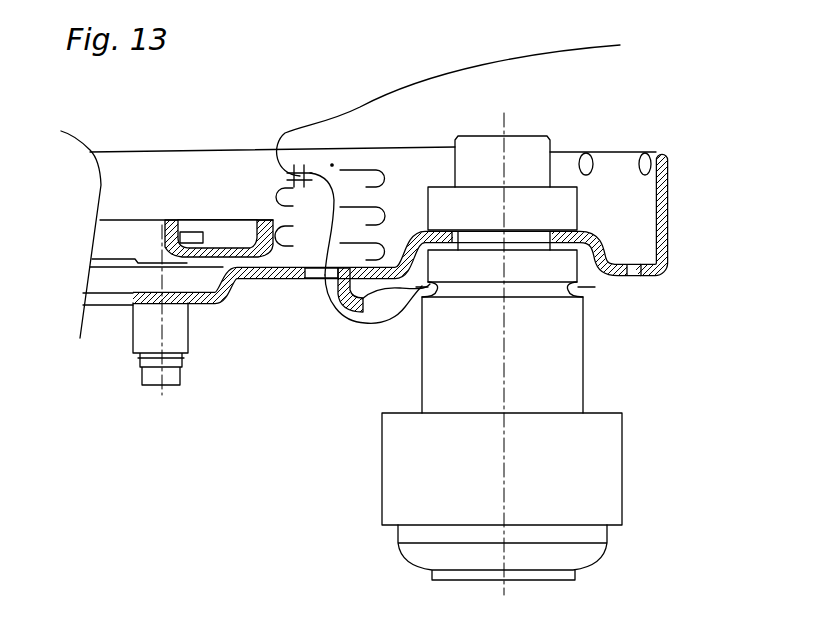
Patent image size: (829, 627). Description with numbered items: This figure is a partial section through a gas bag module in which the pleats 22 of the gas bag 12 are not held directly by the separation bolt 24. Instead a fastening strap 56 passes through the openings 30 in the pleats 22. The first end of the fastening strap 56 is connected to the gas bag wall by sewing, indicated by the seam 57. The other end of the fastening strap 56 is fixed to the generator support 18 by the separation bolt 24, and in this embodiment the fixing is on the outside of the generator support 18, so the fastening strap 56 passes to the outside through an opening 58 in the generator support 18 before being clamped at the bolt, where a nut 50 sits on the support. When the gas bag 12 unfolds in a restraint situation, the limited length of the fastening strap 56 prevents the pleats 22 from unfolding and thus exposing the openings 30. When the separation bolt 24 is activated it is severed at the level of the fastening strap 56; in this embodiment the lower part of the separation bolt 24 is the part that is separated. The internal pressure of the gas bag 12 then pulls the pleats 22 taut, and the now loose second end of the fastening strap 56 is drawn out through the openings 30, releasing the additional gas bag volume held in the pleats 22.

The gas bag 12 is at (447, 63).
The generator support 18 is at (672, 200).
The pleats 22 is at (282, 225).
The separation bolt 24 is at (628, 440).
The openings 30 is at (341, 190).
The nut 50 is at (560, 200).
The fastening strap 56 is at (343, 322).
The seam 57 is at (298, 160).
The opening 58 is at (312, 284).